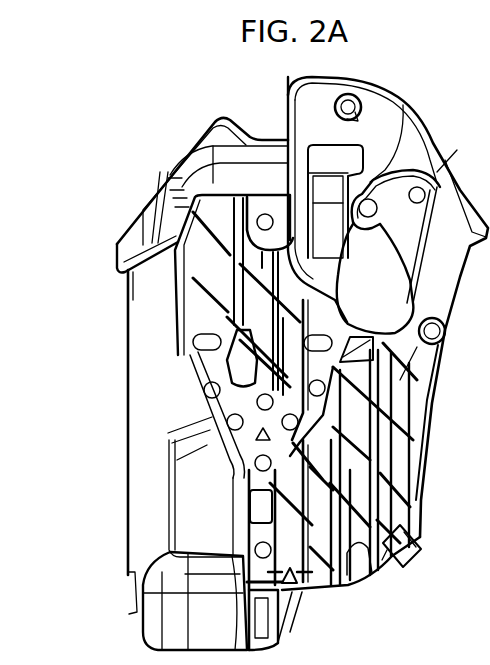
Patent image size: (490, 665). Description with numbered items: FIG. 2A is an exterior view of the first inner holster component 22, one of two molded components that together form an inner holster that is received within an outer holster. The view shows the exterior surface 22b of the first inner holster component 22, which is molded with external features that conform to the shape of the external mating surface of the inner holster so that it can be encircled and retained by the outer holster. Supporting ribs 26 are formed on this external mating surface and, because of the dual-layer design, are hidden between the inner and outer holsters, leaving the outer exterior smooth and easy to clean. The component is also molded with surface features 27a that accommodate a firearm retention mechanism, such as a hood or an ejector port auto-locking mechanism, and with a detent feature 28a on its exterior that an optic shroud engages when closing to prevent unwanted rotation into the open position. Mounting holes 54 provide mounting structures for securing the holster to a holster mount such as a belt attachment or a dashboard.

The first inner holster component 22 is at (117, 208).
The exterior surface 22b is at (210, 522).
The supporting ribs 26 is at (352, 522).
The surface features 27a is at (362, 303).
The detent feature 28a is at (444, 156).
The mounting holes 54 is at (193, 340).